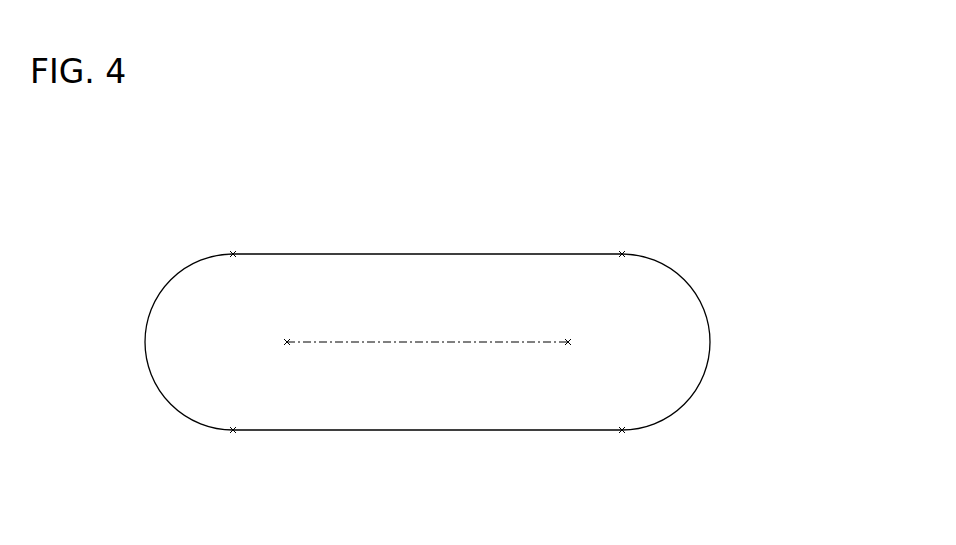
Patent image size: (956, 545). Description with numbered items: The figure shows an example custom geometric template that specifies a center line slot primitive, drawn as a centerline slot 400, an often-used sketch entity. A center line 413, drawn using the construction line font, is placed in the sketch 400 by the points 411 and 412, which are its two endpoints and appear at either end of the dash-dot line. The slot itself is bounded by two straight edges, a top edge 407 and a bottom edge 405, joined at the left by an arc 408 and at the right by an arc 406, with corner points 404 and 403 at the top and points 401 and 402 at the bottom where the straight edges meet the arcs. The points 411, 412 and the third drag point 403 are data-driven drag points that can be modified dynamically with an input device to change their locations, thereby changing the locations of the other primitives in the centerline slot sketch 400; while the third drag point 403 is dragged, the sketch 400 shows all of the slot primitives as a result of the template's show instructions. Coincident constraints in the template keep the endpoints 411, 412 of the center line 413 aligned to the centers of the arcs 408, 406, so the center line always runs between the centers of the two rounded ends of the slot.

The centerline slot 400 is at (514, 406).
The bottom-left corner point 401 is at (231, 434).
The bottom-right corner point 402 is at (626, 434).
The third drag point 403 is at (625, 250).
The top-left corner point 404 is at (232, 250).
The bottom straight edge 405 is at (333, 433).
The arc 406 is at (711, 319).
The top straight edge 407 is at (510, 252).
The arc 408 is at (156, 303).
The point 411 is at (283, 347).
The point 412 is at (572, 345).
The center line 413 is at (452, 340).